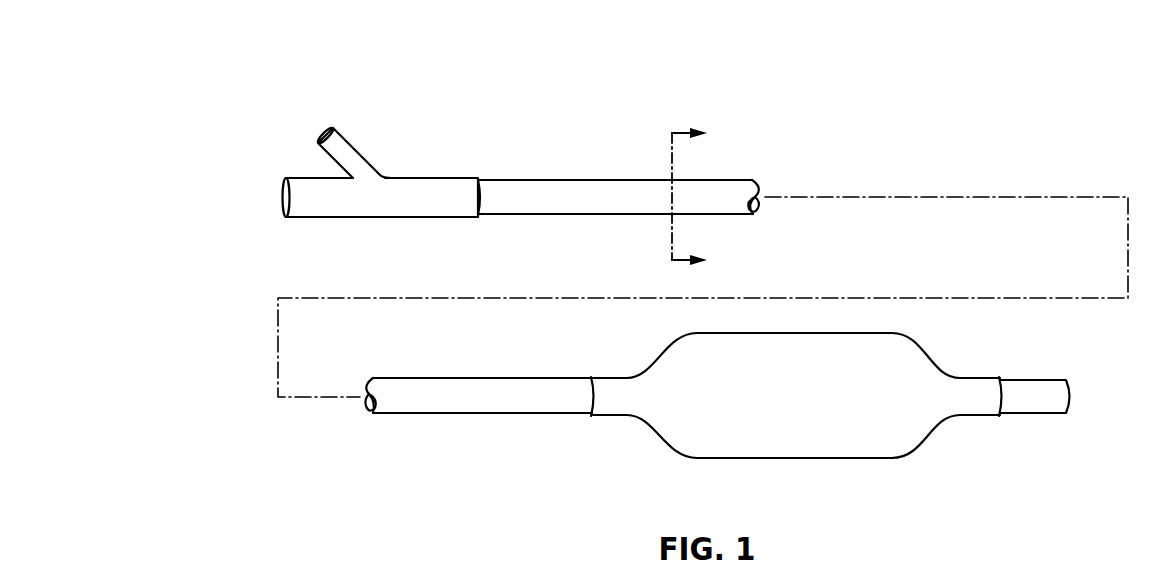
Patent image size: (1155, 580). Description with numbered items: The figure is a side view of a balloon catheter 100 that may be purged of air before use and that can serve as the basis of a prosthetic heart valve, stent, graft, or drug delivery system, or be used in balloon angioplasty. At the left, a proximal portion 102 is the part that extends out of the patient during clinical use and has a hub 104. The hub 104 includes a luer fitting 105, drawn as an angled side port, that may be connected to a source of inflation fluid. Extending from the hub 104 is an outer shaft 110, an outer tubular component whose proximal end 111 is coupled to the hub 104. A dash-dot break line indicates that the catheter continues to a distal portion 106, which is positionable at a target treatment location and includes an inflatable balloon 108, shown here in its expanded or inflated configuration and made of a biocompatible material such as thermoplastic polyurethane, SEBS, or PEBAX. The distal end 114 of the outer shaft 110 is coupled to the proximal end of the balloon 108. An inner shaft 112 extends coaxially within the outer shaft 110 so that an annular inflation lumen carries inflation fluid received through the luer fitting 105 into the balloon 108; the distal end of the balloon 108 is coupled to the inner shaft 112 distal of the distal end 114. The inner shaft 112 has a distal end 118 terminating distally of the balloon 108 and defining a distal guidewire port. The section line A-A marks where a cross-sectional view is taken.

The balloon catheter 100 is at (259, 59).
The proximal portion 102 is at (557, 120).
The hub 104 is at (347, 202).
The luer fitting 105 is at (357, 158).
The distal portion 106 is at (964, 481).
The balloon 108 is at (847, 438).
The outer shaft 110 is at (565, 200).
The proximal end of outer shaft 111 is at (487, 192).
The inner shaft 112 is at (1008, 390).
The distal end of outer shaft 114 is at (578, 398).
The distal end of inner shaft 118 is at (1050, 402).